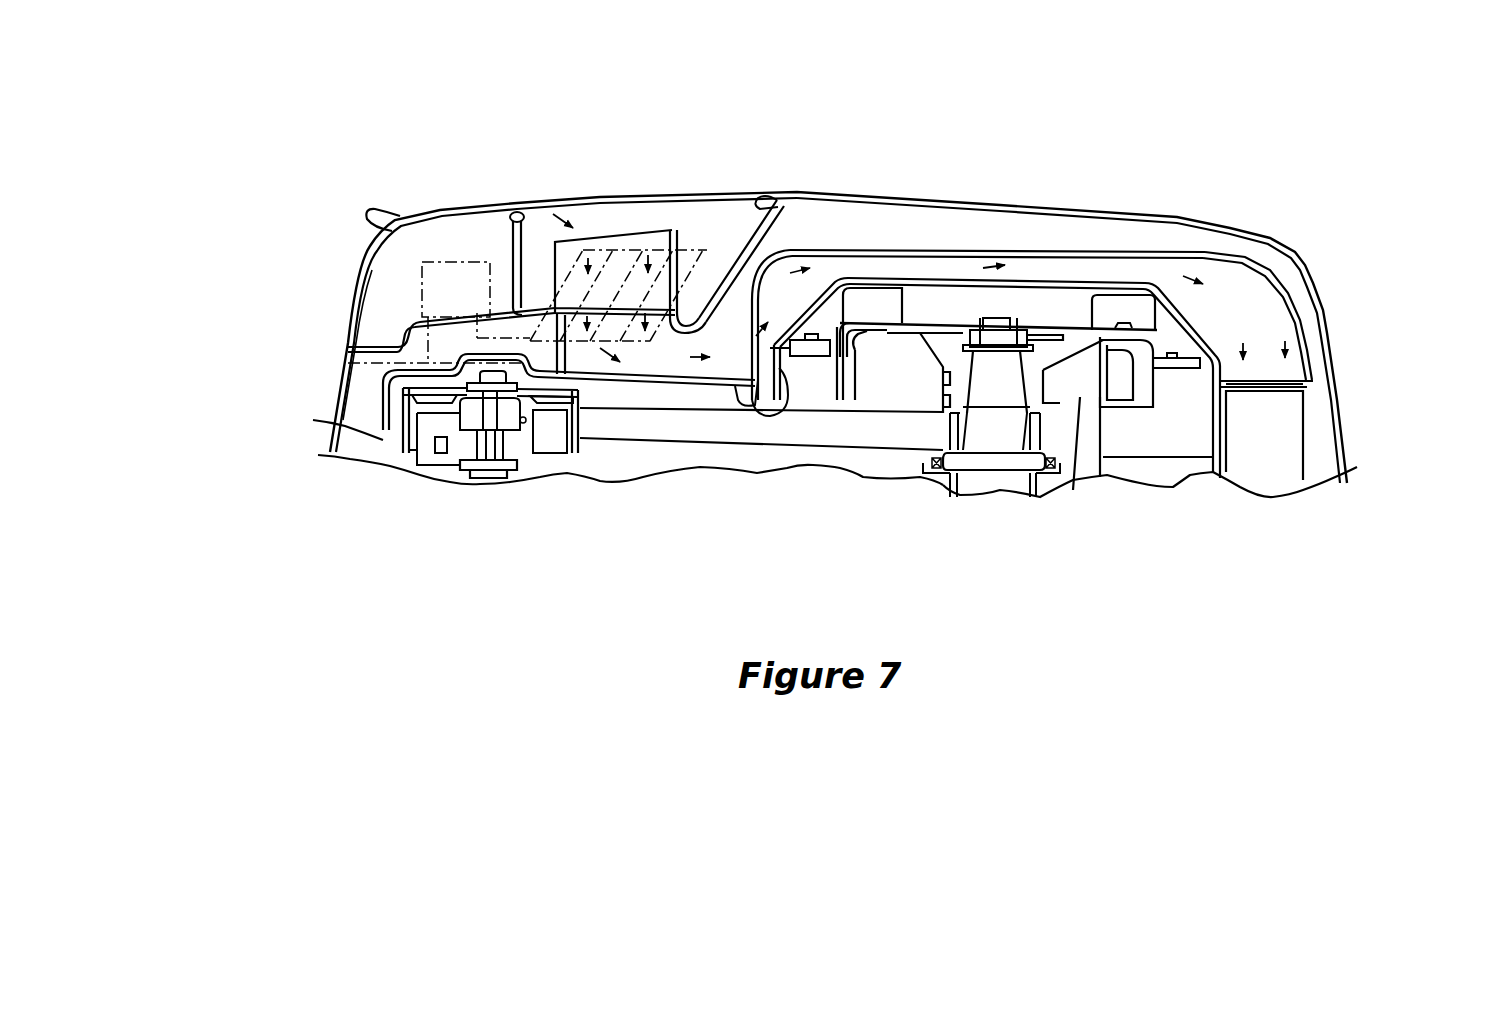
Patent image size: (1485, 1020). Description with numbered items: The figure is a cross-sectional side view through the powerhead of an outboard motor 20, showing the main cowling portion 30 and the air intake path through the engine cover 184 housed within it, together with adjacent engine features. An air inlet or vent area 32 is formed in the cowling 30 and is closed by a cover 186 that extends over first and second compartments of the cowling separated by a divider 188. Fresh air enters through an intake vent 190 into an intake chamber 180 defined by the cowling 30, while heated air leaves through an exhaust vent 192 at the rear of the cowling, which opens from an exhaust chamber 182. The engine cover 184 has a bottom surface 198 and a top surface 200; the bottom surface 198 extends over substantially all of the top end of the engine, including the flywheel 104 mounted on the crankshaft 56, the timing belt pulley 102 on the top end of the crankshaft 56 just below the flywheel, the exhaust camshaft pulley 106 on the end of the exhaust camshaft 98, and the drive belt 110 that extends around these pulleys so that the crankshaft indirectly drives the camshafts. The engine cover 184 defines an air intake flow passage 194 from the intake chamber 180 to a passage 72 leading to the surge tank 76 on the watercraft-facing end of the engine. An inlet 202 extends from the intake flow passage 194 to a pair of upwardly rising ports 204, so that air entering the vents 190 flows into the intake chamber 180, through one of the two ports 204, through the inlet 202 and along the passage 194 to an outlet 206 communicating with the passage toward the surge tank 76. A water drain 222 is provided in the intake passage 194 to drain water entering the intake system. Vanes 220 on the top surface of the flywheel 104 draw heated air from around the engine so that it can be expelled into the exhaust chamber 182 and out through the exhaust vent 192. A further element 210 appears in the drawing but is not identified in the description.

The outboard motor 20 is at (1302, 247).
The main cowling portion 30 is at (1233, 223).
The air inlet or vent area 32 is at (318, 206).
The crankshaft 56 is at (968, 487).
The passage 72 is at (1290, 422).
The surge tank 76 is at (1270, 490).
The exhaust camshaft 98 is at (488, 478).
The timing belt pulley 102 is at (1027, 437).
The flywheel 104 is at (933, 342).
The exhaust camshaft pulley 106 is at (330, 421).
The drive belt 110 is at (855, 428).
The intake chamber 180 is at (594, 236).
The exhaust chamber 182 is at (460, 235).
The engine cover 184 is at (1005, 243).
The cover 186 is at (622, 216).
The divider 188 is at (510, 226).
The intake vent 190 is at (707, 250).
The exhaust vent 192 is at (347, 310).
The air intake flow passage 194 is at (1052, 255).
The bottom surface 198 is at (697, 388).
The top surface 200 is at (918, 248).
The inlet 202 is at (620, 324).
The upwardly rising ports 204 is at (652, 222).
The outlet 206 is at (1287, 371).
The seal 210 is at (430, 262).
The vanes 220 is at (873, 300).
The water drain 222 is at (766, 250).